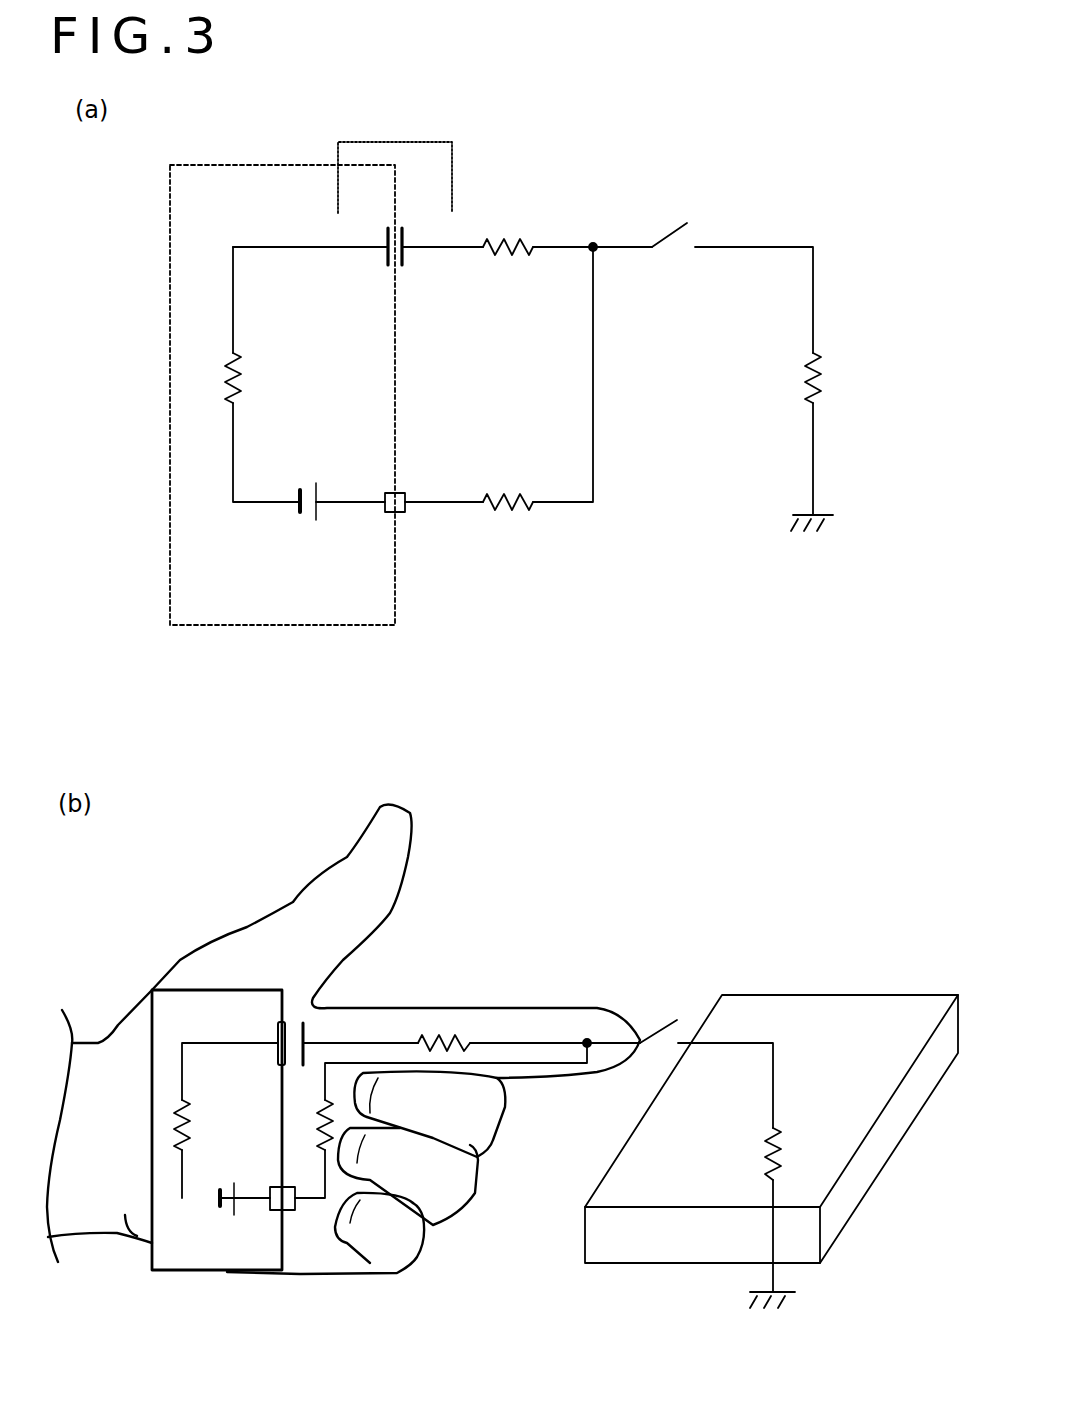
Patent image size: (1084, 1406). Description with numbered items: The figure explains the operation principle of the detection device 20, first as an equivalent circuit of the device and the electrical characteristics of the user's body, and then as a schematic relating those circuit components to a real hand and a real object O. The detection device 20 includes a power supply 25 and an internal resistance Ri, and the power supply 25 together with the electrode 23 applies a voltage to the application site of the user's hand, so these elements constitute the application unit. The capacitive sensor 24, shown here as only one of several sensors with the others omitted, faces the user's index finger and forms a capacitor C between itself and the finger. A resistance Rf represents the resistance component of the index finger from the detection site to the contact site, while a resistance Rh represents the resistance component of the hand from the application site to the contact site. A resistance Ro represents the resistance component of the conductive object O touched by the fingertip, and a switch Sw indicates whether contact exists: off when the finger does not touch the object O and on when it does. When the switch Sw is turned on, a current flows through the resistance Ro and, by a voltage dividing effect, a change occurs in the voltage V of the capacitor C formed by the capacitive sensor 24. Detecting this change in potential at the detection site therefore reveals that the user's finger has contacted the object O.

The detection device 20 is at (357, 627).
The electrode 23 is at (398, 512).
The capacitive sensor 24 is at (384, 251).
The power supply 25 is at (308, 520).
The internal resistance Ri is at (193, 1123).
The resistance of the user's finger Rf is at (443, 1025).
The resistance of the user's hand Rh is at (323, 1302).
The resistance of the object Ro is at (733, 1167).
The switch Sw is at (678, 255).
The voltage of the capacitor V is at (395, 162).
The capacitor C is at (298, 1087).
The object O is at (885, 995).